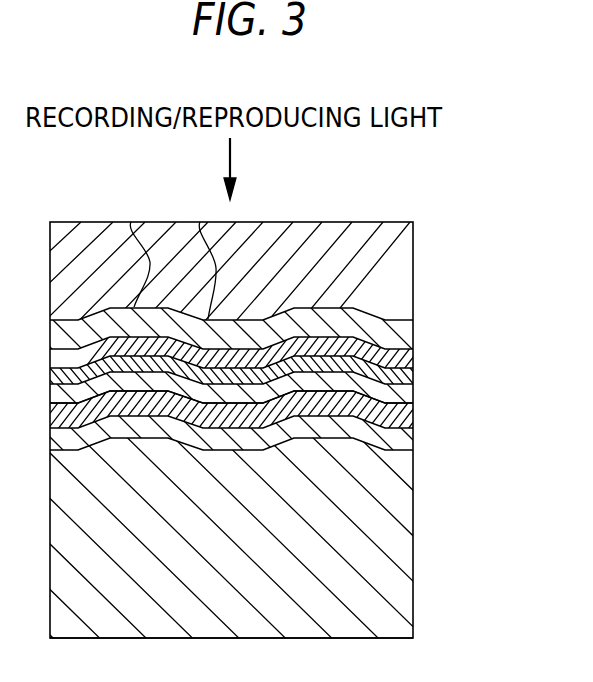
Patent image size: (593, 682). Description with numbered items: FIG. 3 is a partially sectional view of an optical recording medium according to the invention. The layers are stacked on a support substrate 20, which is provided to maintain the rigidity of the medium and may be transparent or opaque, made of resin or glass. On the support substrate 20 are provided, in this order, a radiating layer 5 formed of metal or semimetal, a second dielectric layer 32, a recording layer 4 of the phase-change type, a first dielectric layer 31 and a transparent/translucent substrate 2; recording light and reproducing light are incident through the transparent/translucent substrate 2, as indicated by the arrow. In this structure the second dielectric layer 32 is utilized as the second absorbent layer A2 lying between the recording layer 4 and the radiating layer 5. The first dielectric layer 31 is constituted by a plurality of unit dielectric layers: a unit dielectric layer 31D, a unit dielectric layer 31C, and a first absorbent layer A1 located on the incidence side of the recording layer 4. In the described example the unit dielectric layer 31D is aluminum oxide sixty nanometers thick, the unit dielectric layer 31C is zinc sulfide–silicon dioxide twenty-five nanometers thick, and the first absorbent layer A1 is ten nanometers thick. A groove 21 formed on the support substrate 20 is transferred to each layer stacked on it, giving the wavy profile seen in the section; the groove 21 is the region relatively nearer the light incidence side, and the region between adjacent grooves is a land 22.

The transparent/translucent substrate 2 is at (418, 253).
The support substrate 20 is at (418, 509).
The groove 21 is at (131, 222).
The land 22 is at (200, 222).
The first dielectric layer 31 is at (296, 425).
The unit dielectric layer 31D is at (418, 327).
The unit dielectric layer 31C is at (418, 357).
The first absorbent layer A1 is at (418, 378).
The recording layer 4 is at (418, 397).
The second dielectric layer 32 is at (418, 418).
The second absorbent layer A2 is at (297, 413).
The radiating layer 5 is at (418, 442).